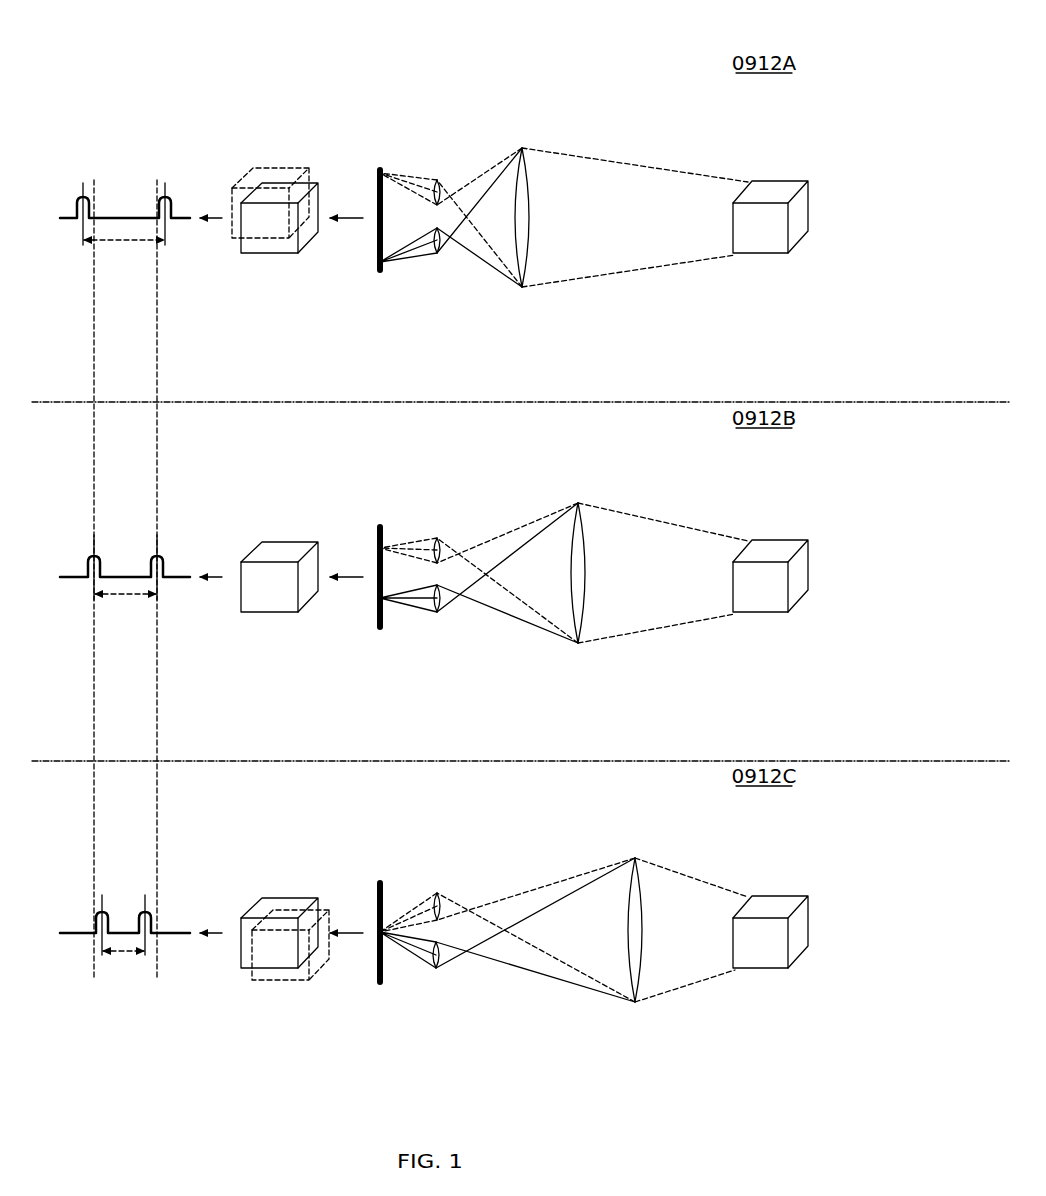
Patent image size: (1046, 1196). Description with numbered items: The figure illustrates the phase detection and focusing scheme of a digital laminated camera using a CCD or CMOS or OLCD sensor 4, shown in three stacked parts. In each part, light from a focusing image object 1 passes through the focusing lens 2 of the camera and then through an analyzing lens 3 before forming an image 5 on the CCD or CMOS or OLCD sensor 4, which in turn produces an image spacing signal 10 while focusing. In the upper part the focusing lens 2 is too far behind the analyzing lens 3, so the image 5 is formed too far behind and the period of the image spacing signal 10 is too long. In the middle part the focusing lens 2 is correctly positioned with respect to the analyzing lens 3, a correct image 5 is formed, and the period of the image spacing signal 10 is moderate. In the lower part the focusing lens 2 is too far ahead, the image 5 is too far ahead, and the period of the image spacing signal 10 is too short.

The focusing image object 1 is at (770, 176).
The focusing lens 2 is at (528, 142).
The analyzing lens 3 is at (439, 220).
The CCD or CMOS or OLCD sensor 4 is at (380, 168).
The image 5 is at (272, 168).
The image spacing signal 10 is at (125, 543).